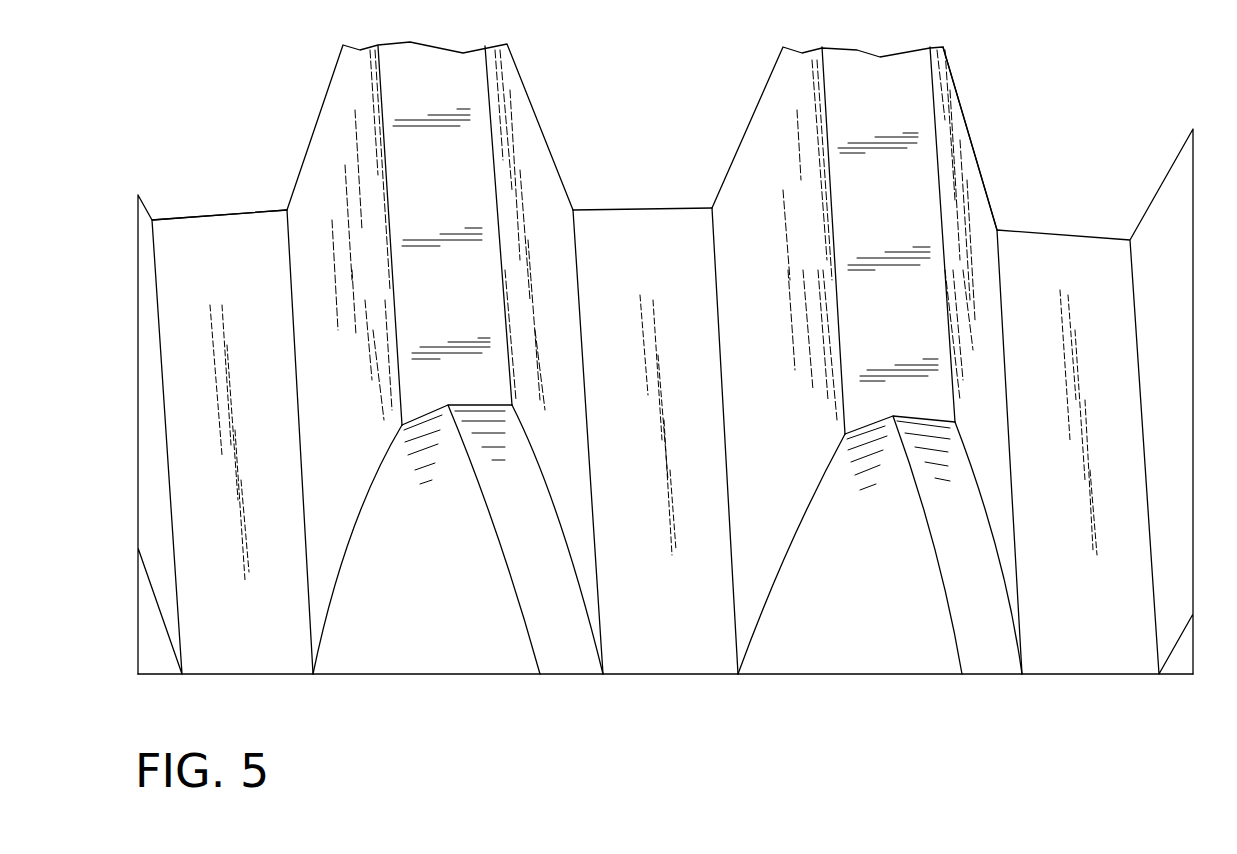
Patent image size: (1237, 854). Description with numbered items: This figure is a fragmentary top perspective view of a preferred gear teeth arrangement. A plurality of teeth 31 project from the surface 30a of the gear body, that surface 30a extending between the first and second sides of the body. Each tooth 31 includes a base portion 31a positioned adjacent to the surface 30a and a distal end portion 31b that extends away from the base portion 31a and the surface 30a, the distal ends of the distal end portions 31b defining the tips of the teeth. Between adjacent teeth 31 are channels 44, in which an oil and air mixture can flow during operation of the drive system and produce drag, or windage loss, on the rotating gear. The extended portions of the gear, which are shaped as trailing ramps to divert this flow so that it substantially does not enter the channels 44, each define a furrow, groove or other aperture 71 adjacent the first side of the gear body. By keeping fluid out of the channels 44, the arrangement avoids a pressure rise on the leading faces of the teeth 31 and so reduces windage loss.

The surface of the gear body 30a is at (212, 218).
The teeth 31 is at (430, 78).
The base portion 31a is at (967, 178).
The distal end portion 31b is at (907, 135).
The channels 44 is at (263, 625).
The furrow, groove or other aperture 71 is at (513, 590).